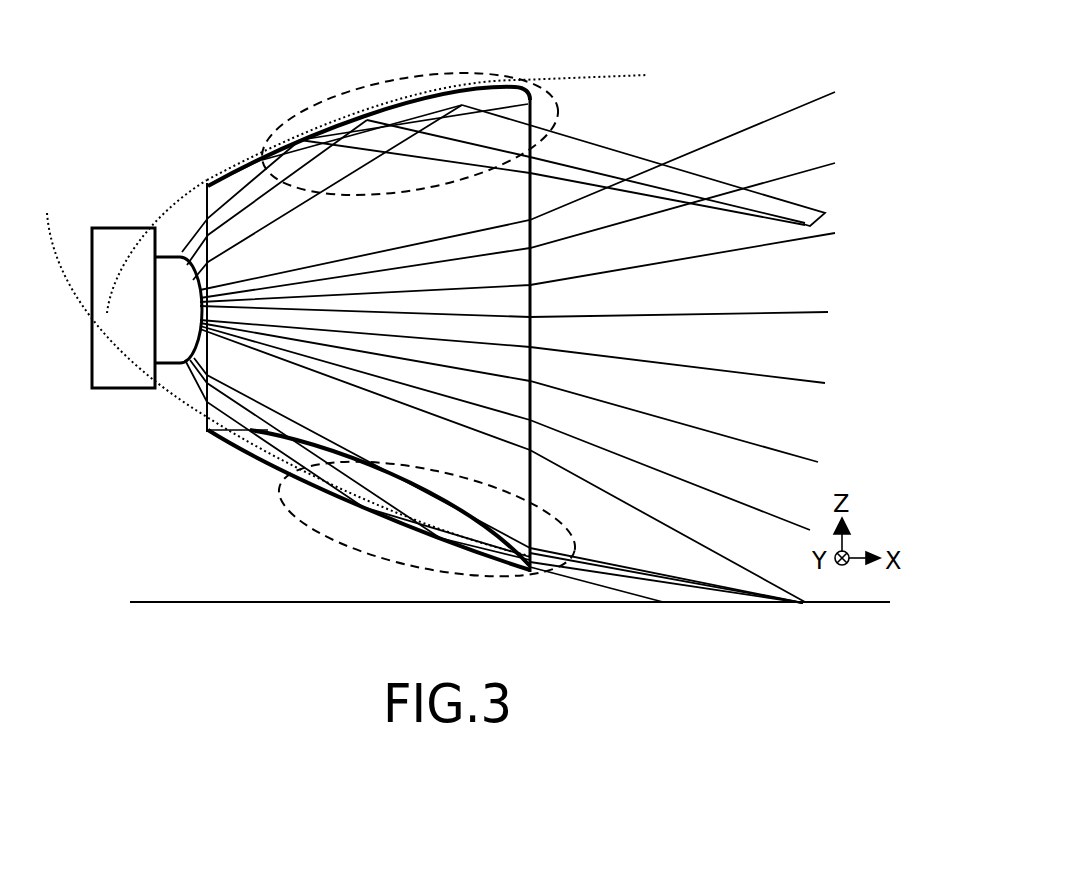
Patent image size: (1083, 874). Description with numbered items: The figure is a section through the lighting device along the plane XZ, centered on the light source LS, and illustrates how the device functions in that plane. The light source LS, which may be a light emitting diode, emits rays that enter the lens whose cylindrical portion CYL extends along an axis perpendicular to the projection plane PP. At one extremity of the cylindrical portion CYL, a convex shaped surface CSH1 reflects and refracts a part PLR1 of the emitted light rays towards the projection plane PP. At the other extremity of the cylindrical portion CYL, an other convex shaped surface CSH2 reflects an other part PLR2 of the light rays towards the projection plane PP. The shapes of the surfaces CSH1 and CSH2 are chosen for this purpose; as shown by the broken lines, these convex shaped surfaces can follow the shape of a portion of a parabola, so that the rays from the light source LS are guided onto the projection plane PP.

The light source LS is at (108, 390).
The convex shaped surface CSH1 is at (250, 161).
The other convex shaped surface CSH2 is at (252, 443).
The cylindrical portion CYL is at (536, 185).
The part of light rays PLR1 is at (403, 100).
The other part of light rays PLR2 is at (313, 520).
The projection plane PP is at (497, 584).